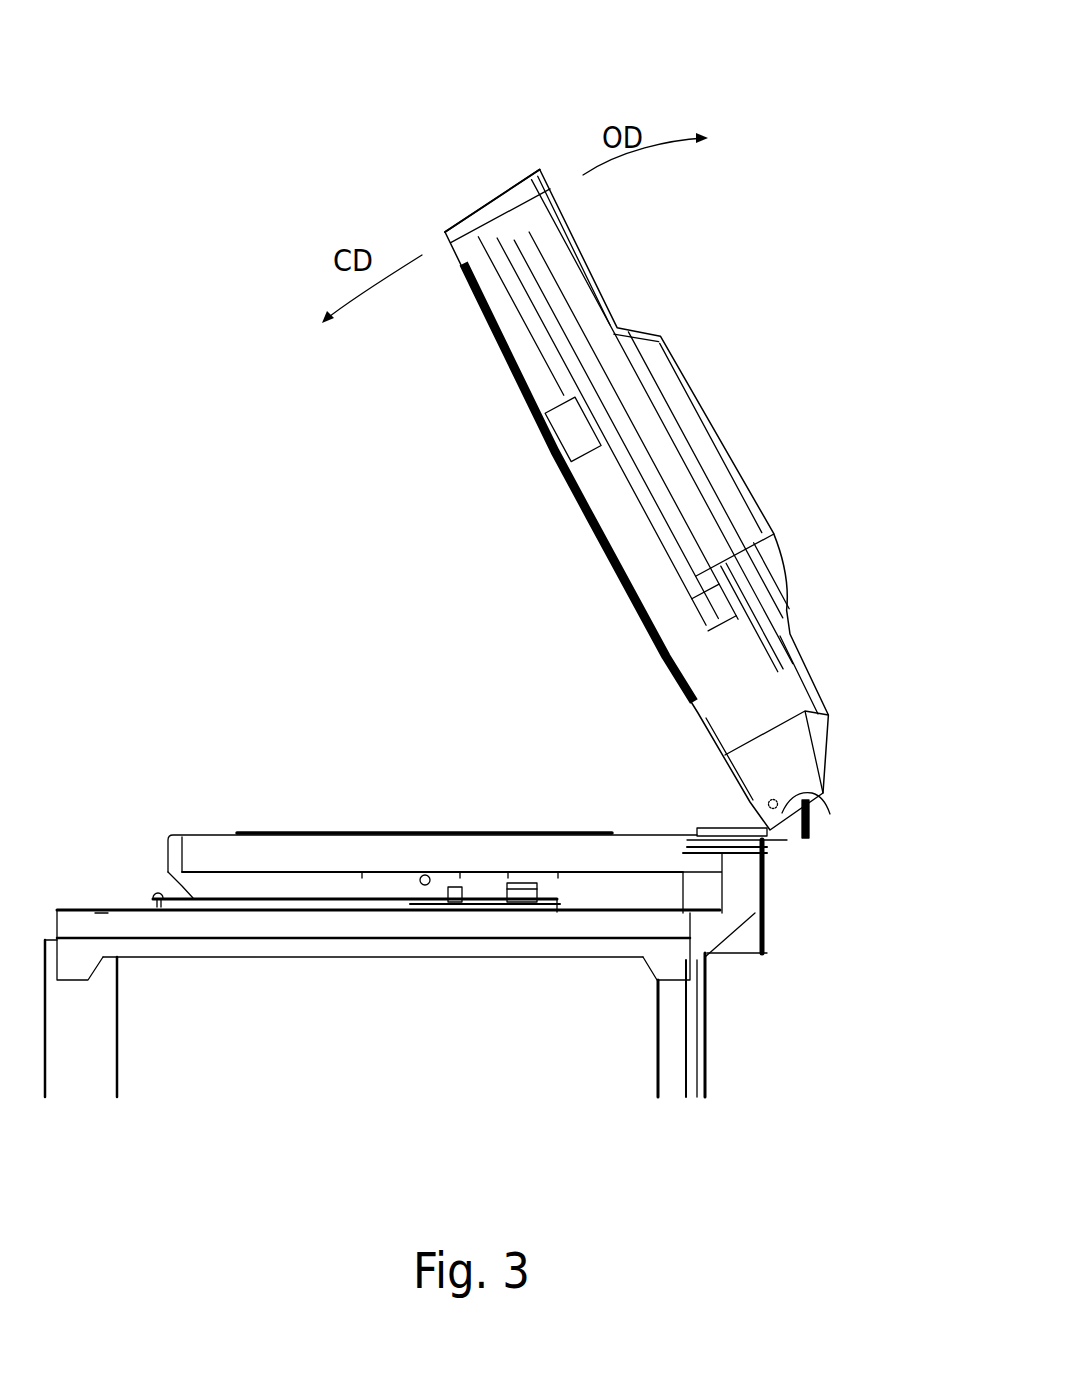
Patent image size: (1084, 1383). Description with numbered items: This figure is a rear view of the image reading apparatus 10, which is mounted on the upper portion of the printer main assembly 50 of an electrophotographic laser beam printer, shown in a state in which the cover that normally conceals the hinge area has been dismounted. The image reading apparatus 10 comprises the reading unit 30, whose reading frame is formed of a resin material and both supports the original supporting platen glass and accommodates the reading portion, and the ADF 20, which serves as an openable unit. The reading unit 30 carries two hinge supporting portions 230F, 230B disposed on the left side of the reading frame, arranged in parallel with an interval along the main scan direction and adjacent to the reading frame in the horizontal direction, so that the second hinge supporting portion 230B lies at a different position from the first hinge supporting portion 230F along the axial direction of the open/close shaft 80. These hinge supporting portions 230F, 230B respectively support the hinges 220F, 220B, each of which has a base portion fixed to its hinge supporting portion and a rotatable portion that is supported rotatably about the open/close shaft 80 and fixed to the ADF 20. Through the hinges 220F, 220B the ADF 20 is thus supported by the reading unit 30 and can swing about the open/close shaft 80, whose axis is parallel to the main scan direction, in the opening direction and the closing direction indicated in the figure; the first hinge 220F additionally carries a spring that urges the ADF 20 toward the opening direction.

The image reading apparatus 10 is at (449, 143).
The ADF 20 is at (700, 365).
The reading unit 30 is at (173, 823).
The printer main assembly 50 is at (720, 1027).
The open/close shaft 80 is at (830, 814).
The hinge 220F is at (588, 792).
The hinge 220B is at (740, 828).
The hinge supporting portion 230F is at (821, 898).
The hinge supporting portion 230B is at (748, 866).